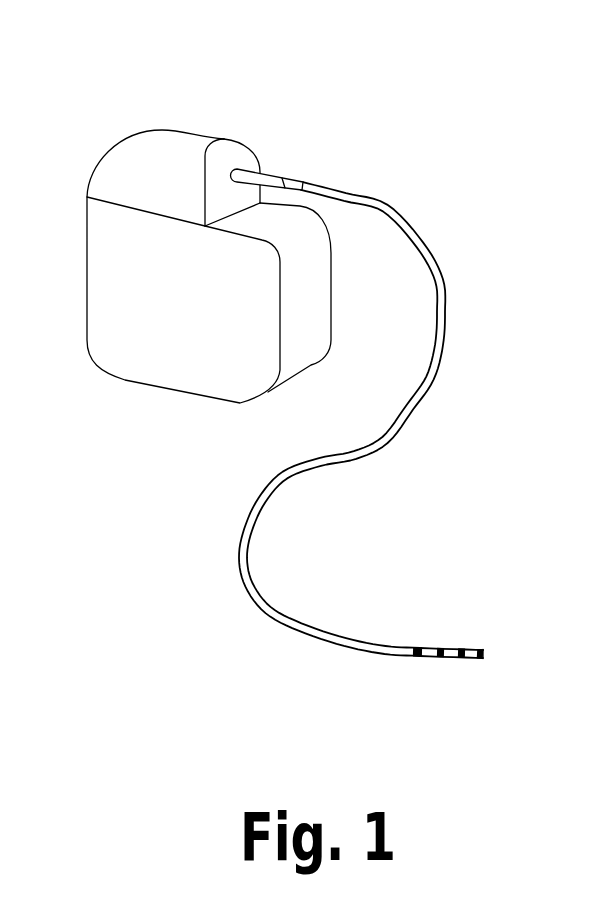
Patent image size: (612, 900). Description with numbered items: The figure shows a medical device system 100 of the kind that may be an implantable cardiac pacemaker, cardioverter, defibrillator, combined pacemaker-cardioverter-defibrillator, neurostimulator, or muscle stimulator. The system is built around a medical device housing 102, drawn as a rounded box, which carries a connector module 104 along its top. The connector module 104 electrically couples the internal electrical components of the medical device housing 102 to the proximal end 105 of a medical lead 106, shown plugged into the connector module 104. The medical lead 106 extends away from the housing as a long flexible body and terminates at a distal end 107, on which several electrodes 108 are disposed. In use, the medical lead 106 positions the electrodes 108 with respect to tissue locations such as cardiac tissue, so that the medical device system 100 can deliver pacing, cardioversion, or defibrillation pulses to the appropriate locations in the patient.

The medical device system 100 is at (297, 98).
The medical device housing 102 is at (85, 283).
The connector module 104 is at (154, 148).
The proximal end 105 is at (268, 170).
The medical lead 106 is at (446, 303).
The distal end 107 is at (487, 655).
The electrodes 108 is at (477, 633).